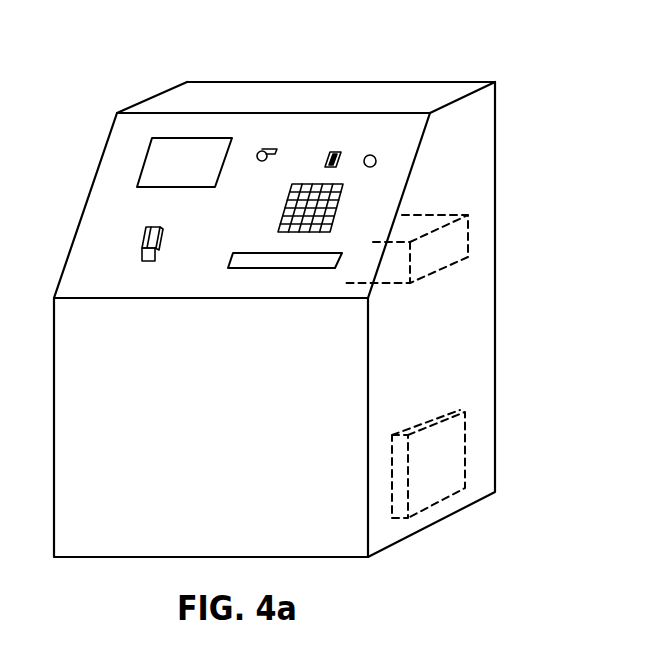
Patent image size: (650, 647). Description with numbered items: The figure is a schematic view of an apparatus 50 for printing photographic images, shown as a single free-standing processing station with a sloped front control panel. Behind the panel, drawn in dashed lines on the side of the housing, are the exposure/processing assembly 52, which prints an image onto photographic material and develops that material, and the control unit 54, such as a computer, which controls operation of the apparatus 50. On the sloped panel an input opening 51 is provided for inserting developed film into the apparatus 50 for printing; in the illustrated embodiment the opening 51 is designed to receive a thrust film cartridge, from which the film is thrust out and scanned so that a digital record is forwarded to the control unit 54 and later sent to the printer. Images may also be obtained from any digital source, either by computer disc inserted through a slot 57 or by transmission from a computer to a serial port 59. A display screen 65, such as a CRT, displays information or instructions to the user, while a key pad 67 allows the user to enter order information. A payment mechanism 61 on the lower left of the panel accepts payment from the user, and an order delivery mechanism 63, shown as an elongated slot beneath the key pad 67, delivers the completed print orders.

The apparatus 50 is at (468, 52).
The input opening 51 is at (256, 151).
The exposure/processing assembly 52 is at (468, 237).
The control unit 54 is at (468, 435).
The slot 57 is at (335, 152).
The serial port 59 is at (376, 157).
The payment mechanism 61 is at (141, 237).
The order delivery mechanism 63 is at (251, 253).
The display screen 65 is at (140, 165).
The key pad 67 is at (283, 208).